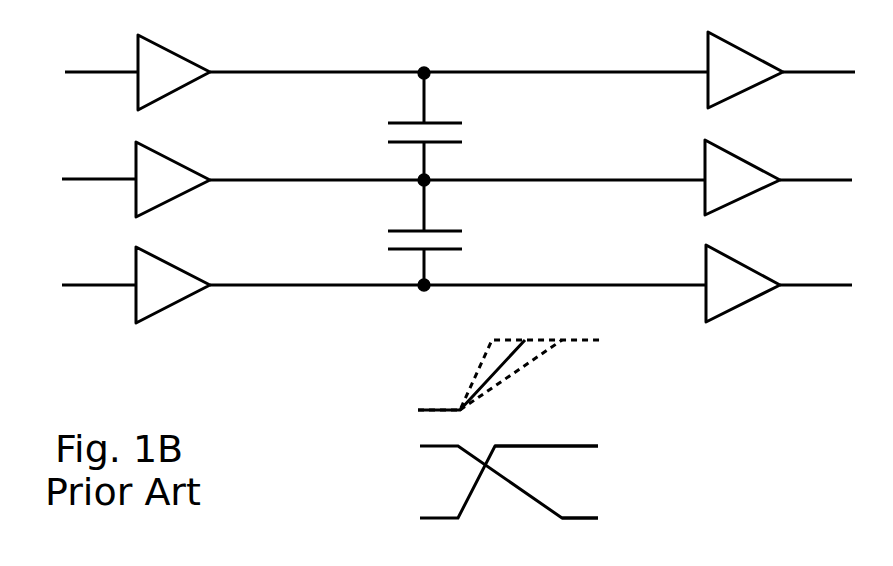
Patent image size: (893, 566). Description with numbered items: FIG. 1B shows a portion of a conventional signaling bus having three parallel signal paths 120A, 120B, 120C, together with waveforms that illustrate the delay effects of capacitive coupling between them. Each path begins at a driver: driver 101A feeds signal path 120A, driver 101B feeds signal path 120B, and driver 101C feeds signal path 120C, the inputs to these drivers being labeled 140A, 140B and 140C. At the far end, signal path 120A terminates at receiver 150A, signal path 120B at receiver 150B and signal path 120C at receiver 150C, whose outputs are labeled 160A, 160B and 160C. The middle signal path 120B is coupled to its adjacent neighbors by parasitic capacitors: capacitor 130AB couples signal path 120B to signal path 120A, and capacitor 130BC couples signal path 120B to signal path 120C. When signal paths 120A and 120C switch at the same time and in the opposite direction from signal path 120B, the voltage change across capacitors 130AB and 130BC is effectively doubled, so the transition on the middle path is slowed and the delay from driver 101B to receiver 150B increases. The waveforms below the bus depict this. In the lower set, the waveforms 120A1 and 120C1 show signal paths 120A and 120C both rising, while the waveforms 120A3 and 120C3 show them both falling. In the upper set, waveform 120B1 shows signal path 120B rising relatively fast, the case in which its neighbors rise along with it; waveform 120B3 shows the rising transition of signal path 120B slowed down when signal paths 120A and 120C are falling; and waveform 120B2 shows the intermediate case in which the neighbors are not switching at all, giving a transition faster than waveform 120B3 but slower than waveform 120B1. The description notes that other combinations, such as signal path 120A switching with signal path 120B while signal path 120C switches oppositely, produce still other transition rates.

The driver 101A is at (174, 72).
The driver 101B is at (173, 179).
The driver 101C is at (173, 285).
The signal path 120A is at (382, 72).
The signal path 120B is at (378, 180).
The signal path 120C is at (363, 285).
The parasitic capacitor 130AB is at (442, 122).
The parasitic capacitor 130BC is at (440, 230).
The input signal A 140A is at (107, 72).
The input signal B 140B is at (104, 179).
The input signal C 140C is at (104, 285).
The receiver 150A is at (745, 70).
The receiver 150B is at (742, 177).
The receiver 150C is at (743, 283).
The output signal A 160A is at (808, 72).
The output signal B 160B is at (806, 180).
The output signal C 160C is at (796, 285).
The waveform of signal path 120B 120B1 is at (486, 355).
The waveform of signal path 120B 120B2 is at (514, 353).
The waveform of signal path 120B 120B3 is at (503, 388).
The waveform of signal path 120A 120A1 is at (466, 503).
The waveform of signal path 120C 120C1 is at (466, 503).
The waveform of signal path 120A 120A3 is at (518, 486).
The waveform of signal path 120C 120C3 is at (518, 486).